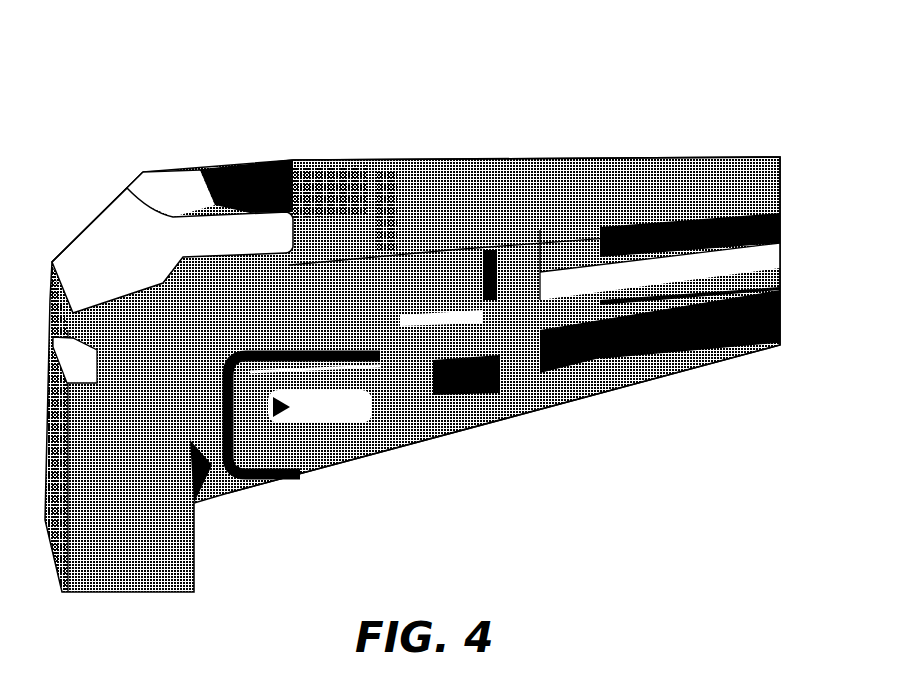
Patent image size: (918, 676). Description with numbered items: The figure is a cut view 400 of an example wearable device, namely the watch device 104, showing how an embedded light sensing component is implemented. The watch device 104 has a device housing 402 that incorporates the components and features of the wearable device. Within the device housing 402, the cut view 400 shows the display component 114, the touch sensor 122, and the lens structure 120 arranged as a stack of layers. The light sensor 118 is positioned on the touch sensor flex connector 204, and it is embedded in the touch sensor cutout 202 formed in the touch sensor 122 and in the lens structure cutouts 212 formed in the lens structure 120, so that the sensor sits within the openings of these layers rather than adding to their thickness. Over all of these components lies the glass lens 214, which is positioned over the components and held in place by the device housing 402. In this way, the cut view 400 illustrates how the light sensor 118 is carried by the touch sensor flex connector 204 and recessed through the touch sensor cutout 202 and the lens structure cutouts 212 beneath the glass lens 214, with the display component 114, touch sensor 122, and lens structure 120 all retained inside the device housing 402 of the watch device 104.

The cut view 400 is at (643, 72).
The device housing 402 is at (143, 172).
The watch device 104 is at (286, 556).
The glass lens 214 is at (308, 175).
The lens structure cutouts 212 is at (450, 250).
The lens structure 120 is at (617, 243).
The touch sensor 122 is at (705, 352).
The display component 114 is at (623, 388).
The touch sensor cutout 202 is at (493, 300).
The light sensor 118 is at (395, 300).
The touch sensor flex connector 204 is at (290, 265).